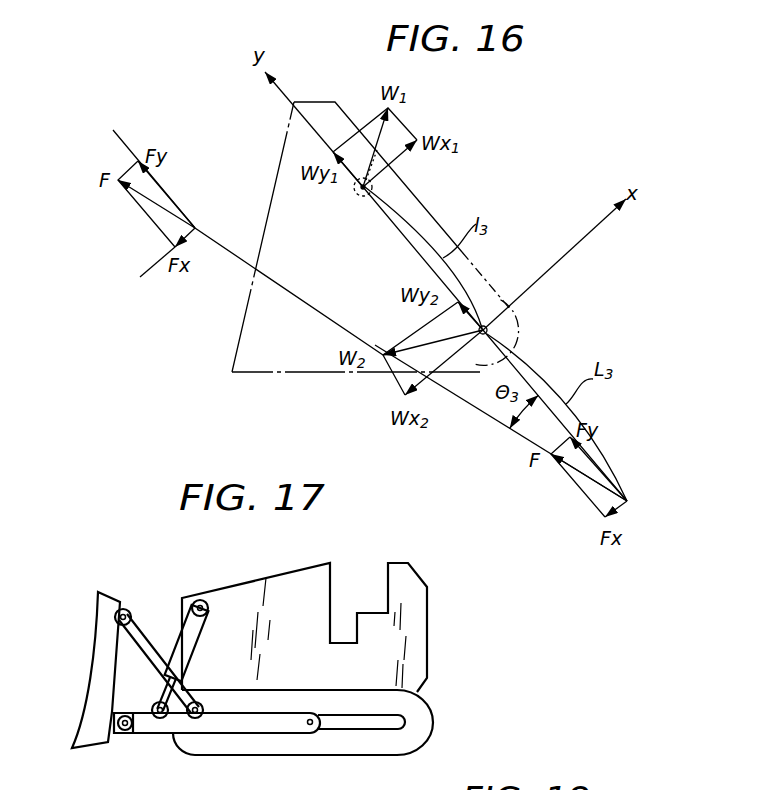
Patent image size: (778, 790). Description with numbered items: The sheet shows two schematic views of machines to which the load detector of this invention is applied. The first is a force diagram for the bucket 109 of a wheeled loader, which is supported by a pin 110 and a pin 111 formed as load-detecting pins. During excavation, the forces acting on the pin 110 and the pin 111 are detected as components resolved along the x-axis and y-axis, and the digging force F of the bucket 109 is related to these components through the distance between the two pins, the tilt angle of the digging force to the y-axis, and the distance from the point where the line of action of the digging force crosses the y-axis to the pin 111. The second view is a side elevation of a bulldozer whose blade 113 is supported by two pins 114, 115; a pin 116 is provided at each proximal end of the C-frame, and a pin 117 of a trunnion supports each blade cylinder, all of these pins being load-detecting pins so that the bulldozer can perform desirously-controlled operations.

In FIG. 16, the bucket 109 is at (272, 374).
In FIG. 16, the pin 110 is at (371, 191).
In FIG. 16, the pin 111 is at (492, 328).
In FIG. 17, the blade 113 is at (90, 688).
In FIG. 17, the pin 114 is at (125, 609).
In FIG. 17, the pin 115 is at (127, 734).
In FIG. 17, the pin 116 is at (309, 727).
In FIG. 17, the pin 117 is at (199, 599).